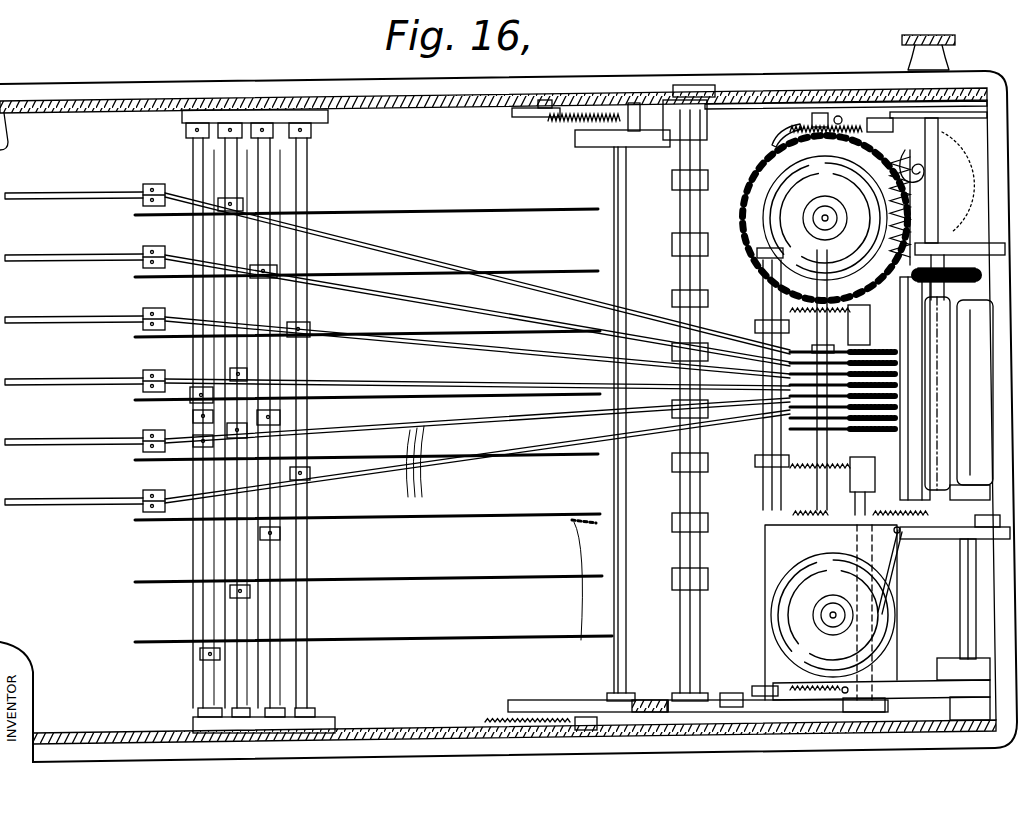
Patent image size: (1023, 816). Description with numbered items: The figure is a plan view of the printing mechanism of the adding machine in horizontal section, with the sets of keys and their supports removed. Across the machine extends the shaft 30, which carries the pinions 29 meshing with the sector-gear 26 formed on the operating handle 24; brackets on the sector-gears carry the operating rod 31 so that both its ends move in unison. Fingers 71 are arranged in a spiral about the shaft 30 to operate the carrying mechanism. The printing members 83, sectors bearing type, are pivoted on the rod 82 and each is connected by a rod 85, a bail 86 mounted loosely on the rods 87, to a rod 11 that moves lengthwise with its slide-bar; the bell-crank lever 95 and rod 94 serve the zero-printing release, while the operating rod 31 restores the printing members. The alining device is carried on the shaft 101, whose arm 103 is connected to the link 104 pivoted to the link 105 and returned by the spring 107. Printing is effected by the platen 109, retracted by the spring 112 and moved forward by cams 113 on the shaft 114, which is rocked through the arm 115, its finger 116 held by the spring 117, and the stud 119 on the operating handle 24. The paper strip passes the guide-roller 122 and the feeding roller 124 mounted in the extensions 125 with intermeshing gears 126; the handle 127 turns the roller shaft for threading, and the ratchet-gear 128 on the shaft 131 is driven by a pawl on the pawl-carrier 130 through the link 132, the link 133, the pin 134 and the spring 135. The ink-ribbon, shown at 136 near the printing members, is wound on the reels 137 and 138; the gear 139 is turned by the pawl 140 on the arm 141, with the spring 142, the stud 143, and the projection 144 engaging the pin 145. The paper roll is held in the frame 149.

The rod 11 is at (505, 210).
The operating handle 24 is at (745, 708).
The sector-gear 26 is at (540, 708).
The pinions 29 is at (645, 148).
The shaft 30 is at (680, 640).
The operating rod 31 is at (612, 655).
The fingers 71 is at (672, 522).
The rod 82 is at (763, 447).
The printing members 83 is at (808, 352).
The rod 85 is at (411, 467).
The bails 86 is at (243, 240).
The rods 87 is at (277, 617).
The rod 94 is at (345, 258).
The bell-crank lever 95 is at (140, 253).
The shaft 101 is at (858, 306).
The arm 103 is at (882, 702).
The link 104 is at (812, 712).
The link 105 is at (576, 730).
The spring 107 is at (515, 725).
The platen 109 is at (923, 388).
The spring 112 is at (852, 520).
The cams 113 is at (990, 500).
The shaft 114 is at (962, 618).
The arm 115 is at (900, 690).
The finger 116 is at (760, 690).
The spring 117 is at (790, 686).
The stud 119 is at (722, 693).
The guide-roller 122 is at (862, 478).
The sheet-feeding roller 124 is at (940, 340).
The extensions 125 is at (985, 245).
The intermeshing gears 126 is at (960, 275).
The operating handle 127 is at (912, 40).
The ratchet-gear 128 is at (942, 150).
The pawl-carrier 130 is at (948, 100).
The shaft 131 is at (938, 205).
The link 132 is at (903, 100).
The link 133 is at (530, 118).
The pin 134 is at (612, 140).
The spring 135 is at (568, 122).
The pawl 136 is at (893, 545).
The reel 137 is at (810, 560).
The reel 138 is at (775, 187).
The gear 139 is at (775, 173).
The pawl 140 is at (782, 127).
The arm 141 is at (828, 152).
The spring 142 is at (847, 107).
The stud 143 is at (838, 115).
The projection 144 is at (820, 112).
The pin 145 is at (815, 118).
The frame 149 is at (1006, 540).